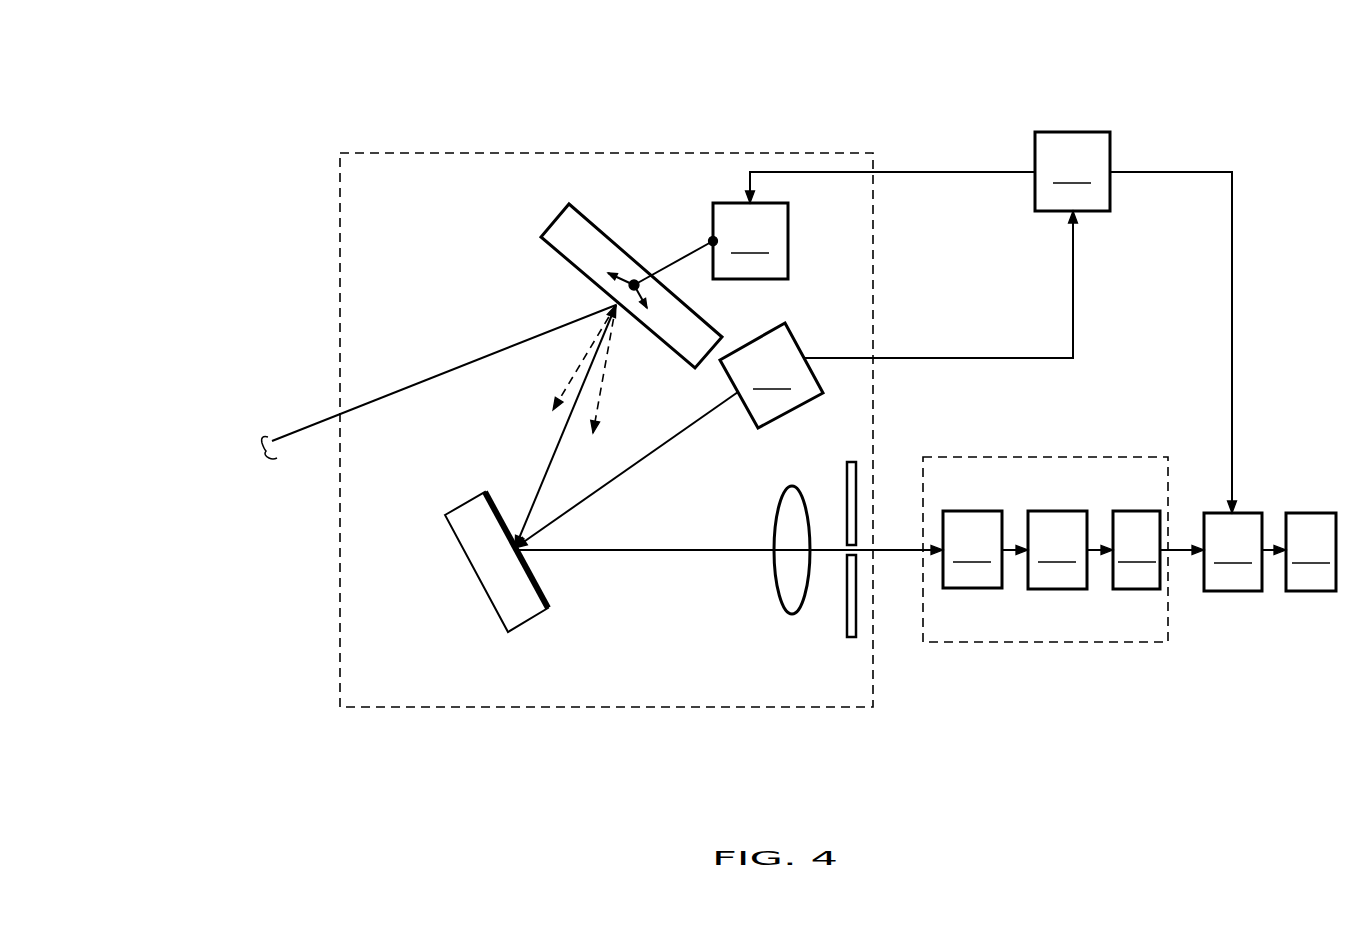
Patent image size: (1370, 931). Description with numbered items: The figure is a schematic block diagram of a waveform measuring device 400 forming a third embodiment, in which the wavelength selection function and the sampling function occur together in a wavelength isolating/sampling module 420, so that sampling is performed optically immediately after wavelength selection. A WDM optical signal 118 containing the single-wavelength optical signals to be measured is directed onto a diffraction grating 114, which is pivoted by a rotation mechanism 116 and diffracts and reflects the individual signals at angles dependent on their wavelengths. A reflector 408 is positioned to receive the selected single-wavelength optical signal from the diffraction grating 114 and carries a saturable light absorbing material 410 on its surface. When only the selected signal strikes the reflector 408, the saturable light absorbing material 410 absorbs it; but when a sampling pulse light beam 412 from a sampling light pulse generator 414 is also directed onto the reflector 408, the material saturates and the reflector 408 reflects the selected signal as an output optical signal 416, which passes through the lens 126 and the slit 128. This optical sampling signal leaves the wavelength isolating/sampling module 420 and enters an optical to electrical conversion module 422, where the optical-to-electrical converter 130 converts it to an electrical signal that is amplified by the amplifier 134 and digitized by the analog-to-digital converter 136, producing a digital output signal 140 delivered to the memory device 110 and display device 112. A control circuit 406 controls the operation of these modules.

The waveform measuring device 400 is at (975, 70).
The diffraction grating 114 is at (572, 238).
The rotation mechanism 116 is at (834, 228).
The WDM optical signal 118 is at (307, 425).
The wavelength isolating/sampling module 420 is at (667, 152).
The control circuit 406 is at (1136, 322).
The sampling light pulse generator 414 is at (796, 379).
The reflector 408 is at (510, 595).
The saturable light absorbing material 410 is at (500, 512).
The sampling pulse light beam 412 is at (648, 457).
The output optical signal 416 is at (893, 550).
The lens 126 is at (788, 583).
The slit 128 is at (850, 560).
The optical to electrical conversion module 422 is at (1020, 455).
The optical-to-electrical converter 130 is at (985, 549).
The amplifier 134 is at (1070, 550).
The analog-to-digital converter 136 is at (1136, 550).
The digital output signal 140 is at (1177, 552).
The memory device 110 is at (1245, 552).
The display device 112 is at (1311, 552).